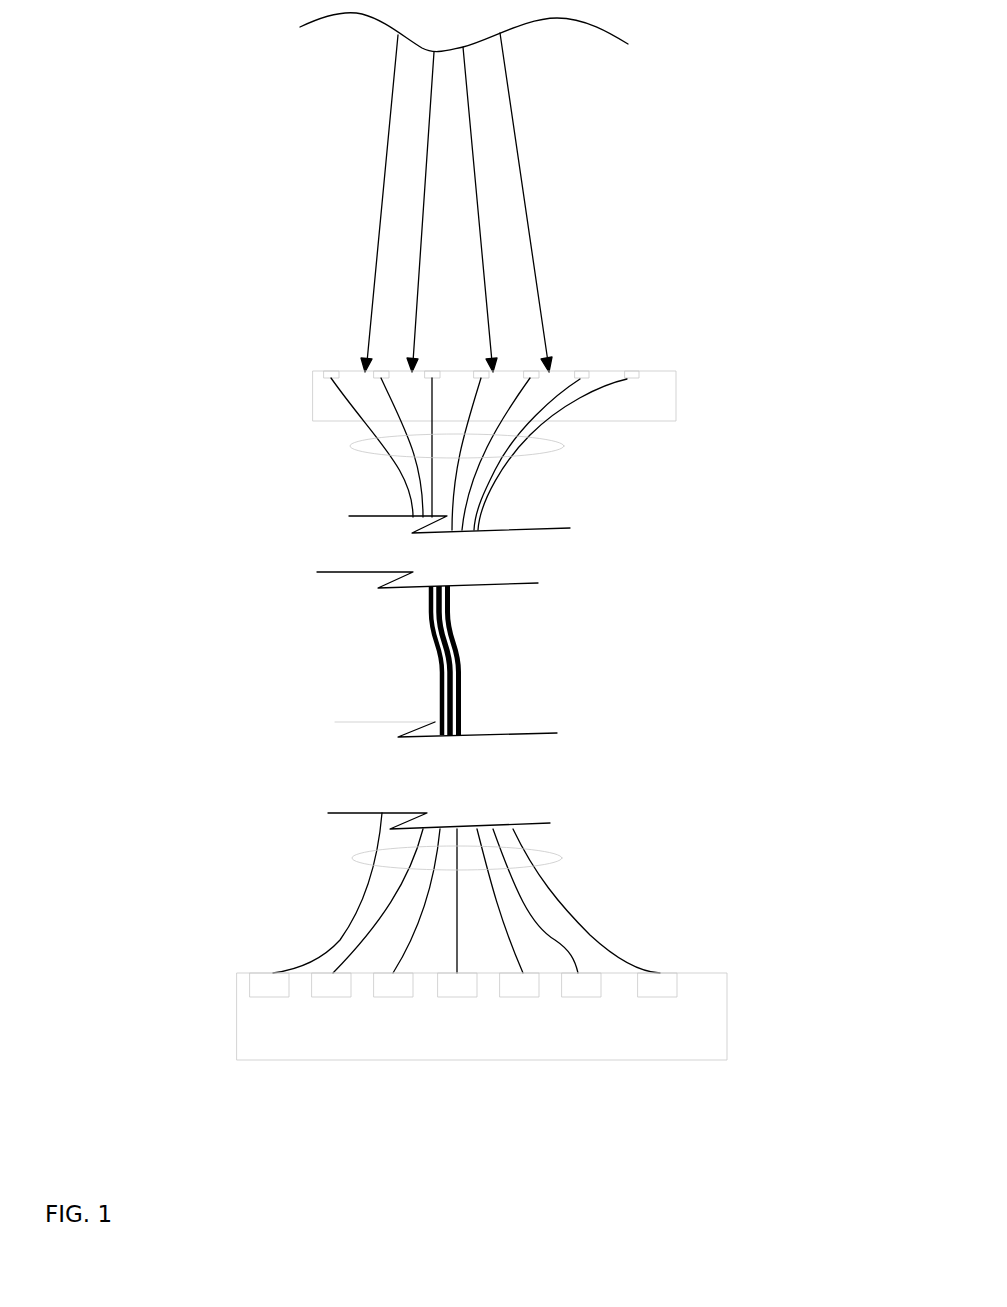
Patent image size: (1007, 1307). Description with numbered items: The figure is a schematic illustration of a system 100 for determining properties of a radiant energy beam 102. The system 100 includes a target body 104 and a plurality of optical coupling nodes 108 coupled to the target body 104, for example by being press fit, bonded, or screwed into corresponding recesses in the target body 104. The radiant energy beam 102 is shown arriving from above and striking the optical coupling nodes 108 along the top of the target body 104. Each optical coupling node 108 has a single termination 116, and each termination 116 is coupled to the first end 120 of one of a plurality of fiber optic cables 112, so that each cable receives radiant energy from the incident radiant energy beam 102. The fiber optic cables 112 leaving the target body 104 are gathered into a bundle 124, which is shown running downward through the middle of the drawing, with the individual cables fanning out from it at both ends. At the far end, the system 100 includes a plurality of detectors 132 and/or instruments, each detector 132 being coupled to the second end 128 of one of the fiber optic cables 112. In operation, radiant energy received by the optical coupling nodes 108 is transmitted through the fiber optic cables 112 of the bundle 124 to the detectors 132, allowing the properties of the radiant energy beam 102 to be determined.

The system 100 is at (120, 1047).
The radiant energy beam 102 is at (388, 170).
The target body 104 is at (312, 397).
The optical coupling nodes 108 is at (581, 371).
The fiber optic cables 112 is at (513, 470).
The termination 116 is at (588, 374).
The first end 120 is at (613, 397).
The bundle 124 is at (353, 445).
The second end 128 is at (626, 946).
The detectors 132 is at (677, 983).